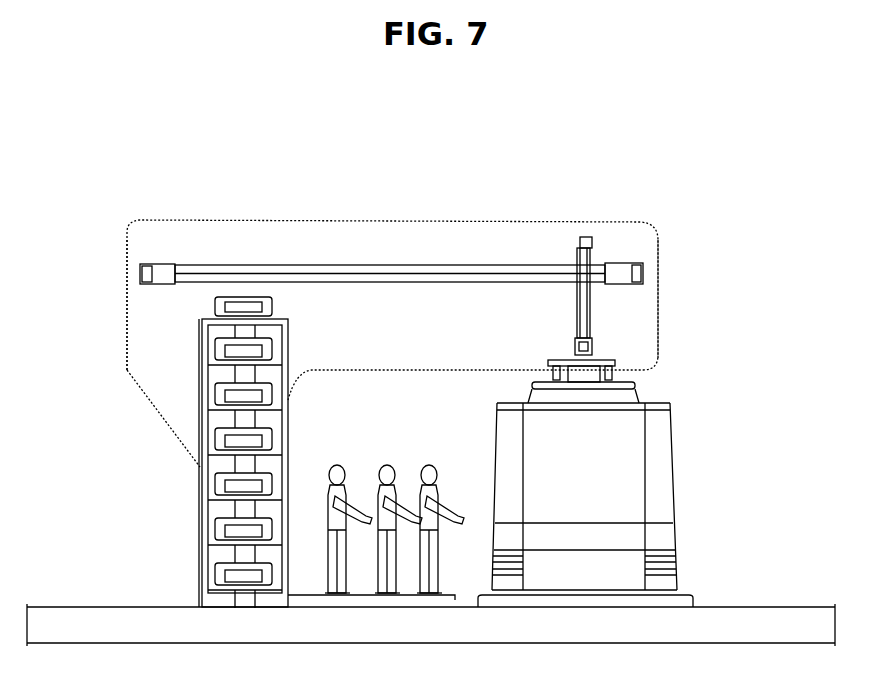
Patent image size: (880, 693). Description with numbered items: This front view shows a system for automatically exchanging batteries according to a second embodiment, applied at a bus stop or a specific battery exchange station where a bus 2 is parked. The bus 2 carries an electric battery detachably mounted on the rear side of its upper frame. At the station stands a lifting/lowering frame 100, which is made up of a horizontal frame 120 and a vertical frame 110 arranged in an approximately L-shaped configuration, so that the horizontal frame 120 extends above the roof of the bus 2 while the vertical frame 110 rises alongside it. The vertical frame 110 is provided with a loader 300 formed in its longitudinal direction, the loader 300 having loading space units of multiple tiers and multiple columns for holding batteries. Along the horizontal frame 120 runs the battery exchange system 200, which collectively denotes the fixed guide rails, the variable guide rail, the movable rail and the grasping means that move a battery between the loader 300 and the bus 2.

The lifting/lowering frame 100 is at (394, 303).
The vertical frame 110 is at (127, 358).
The horizontal frame 120 is at (658, 254).
The battery exchange system 200 is at (532, 265).
The loader 300 is at (201, 467).
The bus 2 is at (672, 465).